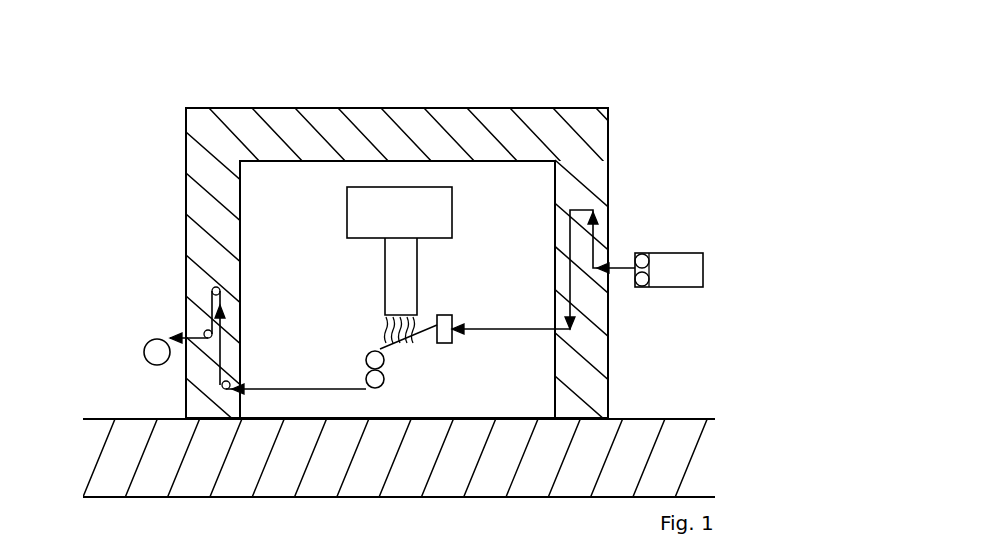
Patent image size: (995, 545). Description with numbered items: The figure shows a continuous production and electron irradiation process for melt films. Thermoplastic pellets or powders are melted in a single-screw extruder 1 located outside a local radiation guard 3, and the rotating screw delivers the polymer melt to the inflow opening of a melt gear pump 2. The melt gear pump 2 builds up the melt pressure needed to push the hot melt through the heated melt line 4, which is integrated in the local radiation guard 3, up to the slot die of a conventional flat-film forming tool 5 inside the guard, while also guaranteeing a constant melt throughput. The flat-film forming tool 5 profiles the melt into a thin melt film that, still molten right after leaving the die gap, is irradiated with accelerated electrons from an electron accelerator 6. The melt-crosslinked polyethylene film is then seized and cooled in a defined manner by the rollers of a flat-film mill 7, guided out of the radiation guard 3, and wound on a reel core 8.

The single-screw extruder 1 is at (690, 253).
The melt gear pump 2 is at (641, 253).
The local radiation guard 3 is at (580, 125).
The heated melt line 4 is at (562, 303).
The flat-film forming tool 5 is at (443, 345).
The electron accelerator 6 is at (400, 267).
The flat-film mill 7 is at (366, 376).
The reel core 8 is at (147, 341).